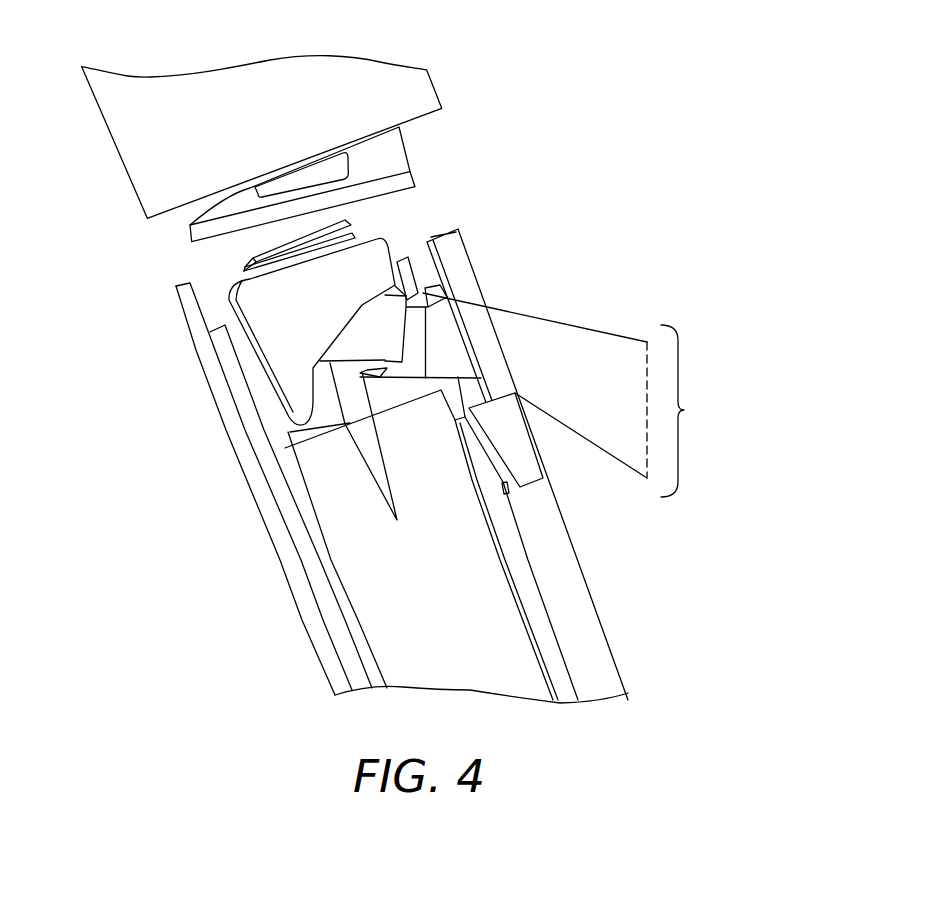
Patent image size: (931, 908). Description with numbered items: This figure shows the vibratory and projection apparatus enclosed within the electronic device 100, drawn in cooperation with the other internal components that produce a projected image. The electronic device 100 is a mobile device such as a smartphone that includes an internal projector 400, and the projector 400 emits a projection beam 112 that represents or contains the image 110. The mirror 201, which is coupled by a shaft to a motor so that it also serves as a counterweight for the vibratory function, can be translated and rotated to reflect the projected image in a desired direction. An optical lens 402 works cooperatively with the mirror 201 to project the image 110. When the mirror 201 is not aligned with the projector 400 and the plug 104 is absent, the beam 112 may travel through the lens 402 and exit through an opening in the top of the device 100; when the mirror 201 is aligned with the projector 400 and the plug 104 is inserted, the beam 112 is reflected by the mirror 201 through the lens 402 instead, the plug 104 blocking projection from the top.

The plug 104 is at (113, 141).
The mirror 201 is at (302, 348).
The optical lens 402 is at (440, 355).
The projection beam 112 is at (573, 322).
The image 110 is at (720, 411).
The electronic device 100 is at (330, 466).
The projector 400 is at (329, 608).